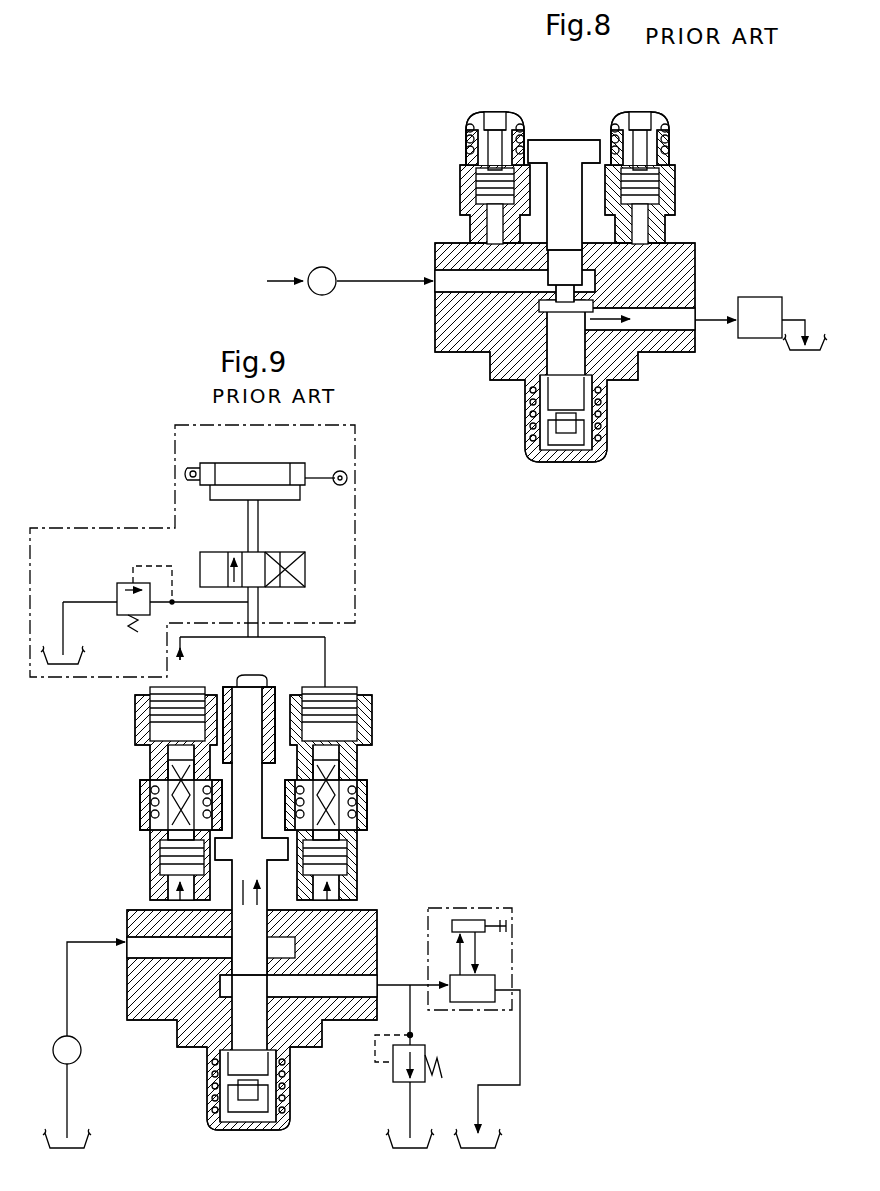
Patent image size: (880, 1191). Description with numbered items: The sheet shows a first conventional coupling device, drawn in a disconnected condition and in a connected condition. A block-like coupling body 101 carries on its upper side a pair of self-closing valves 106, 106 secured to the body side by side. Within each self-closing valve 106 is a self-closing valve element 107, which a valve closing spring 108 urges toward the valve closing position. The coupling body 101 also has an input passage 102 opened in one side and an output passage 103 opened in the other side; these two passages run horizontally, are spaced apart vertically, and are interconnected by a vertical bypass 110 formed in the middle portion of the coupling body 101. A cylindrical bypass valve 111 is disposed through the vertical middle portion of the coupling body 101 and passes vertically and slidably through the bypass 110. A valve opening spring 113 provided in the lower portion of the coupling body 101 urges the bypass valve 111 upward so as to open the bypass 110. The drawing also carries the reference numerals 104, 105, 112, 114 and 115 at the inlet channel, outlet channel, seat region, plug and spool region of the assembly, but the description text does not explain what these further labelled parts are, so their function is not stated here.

In FIG. 8, the coupling body 101 is at (695, 243).
In FIG. 9, the coupling body 101 is at (135, 996).
In FIG. 8, the input passage 102 is at (437, 270).
In FIG. 9, the input passage 102 is at (126, 935).
In FIG. 8, the output passage 103 is at (696, 306).
In FIG. 9, the output passage 103 is at (378, 992).
In FIG. 8, the inlet passage 104 is at (515, 283).
In FIG. 9, the inlet passage 104 is at (211, 945).
In FIG. 8, the outlet passage 105 is at (627, 319).
In FIG. 9, the outlet passage 105 is at (301, 985).
In FIG. 8, the self-closing valve 106 is at (462, 160).
In FIG. 9, the self-closing valve 106 is at (155, 845).
In FIG. 8, the self-closing valve element 107 is at (490, 120).
In FIG. 9, the self-closing valve element 107 is at (148, 800).
In FIG. 8, the valve closing spring 108 is at (467, 126).
In FIG. 8, the vertical bypass 110 is at (566, 338).
In FIG. 9, the vertical bypass 110 is at (282, 972).
In FIG. 8, the bypass valve 111 is at (568, 140).
In FIG. 9, the bypass valve 111 is at (251, 825).
In FIG. 8, the valve seat 112 is at (556, 290).
In FIG. 8, the valve opening spring 113 is at (604, 412).
In FIG. 9, the valve opening spring 113 is at (210, 1080).
In FIG. 8, the plug 114 is at (506, 118).
In FIG. 8, the spool 115 is at (578, 268).